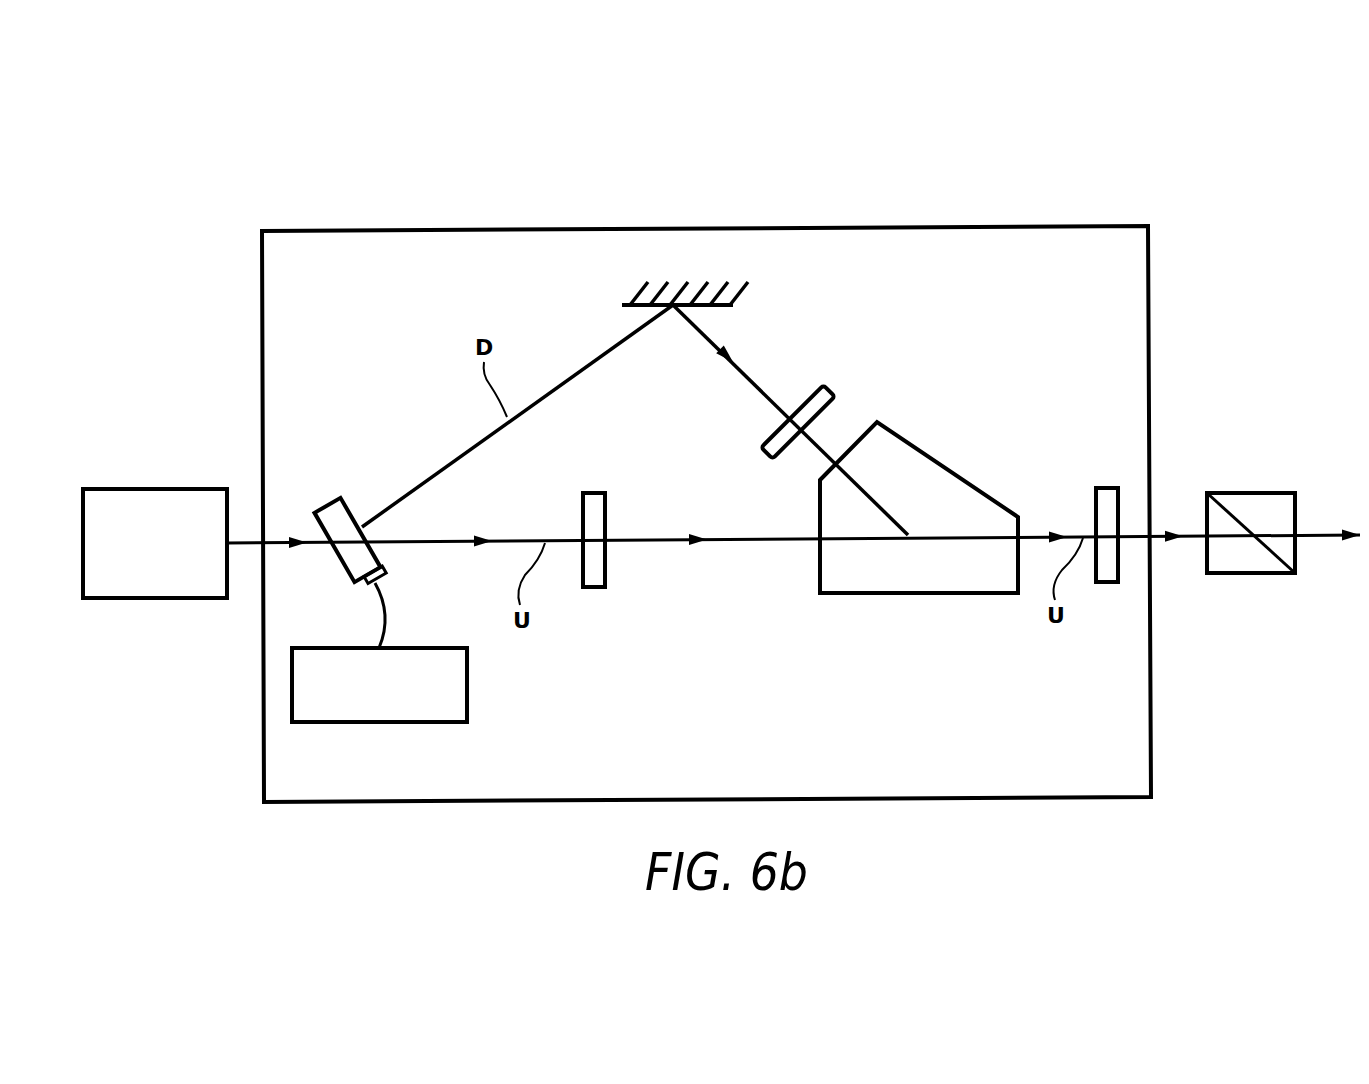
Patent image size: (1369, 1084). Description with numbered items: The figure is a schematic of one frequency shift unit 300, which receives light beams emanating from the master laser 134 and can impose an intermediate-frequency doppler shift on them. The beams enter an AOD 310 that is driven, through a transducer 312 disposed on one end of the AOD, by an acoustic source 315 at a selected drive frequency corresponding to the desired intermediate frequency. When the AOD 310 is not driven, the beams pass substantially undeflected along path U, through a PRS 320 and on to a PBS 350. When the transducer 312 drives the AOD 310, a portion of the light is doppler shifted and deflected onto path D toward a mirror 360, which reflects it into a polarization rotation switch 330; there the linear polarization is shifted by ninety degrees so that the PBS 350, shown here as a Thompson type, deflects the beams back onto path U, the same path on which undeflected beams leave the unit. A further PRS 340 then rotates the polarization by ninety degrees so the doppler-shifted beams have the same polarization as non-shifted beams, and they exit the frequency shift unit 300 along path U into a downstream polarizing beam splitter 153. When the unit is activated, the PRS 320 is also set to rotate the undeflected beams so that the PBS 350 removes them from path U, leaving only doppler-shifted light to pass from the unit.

The master laser 134 is at (150, 488).
The frequency shift unit 300 is at (558, 230).
The AOD 310 is at (350, 503).
The transducer 312 is at (356, 582).
The acoustic source 315 is at (390, 723).
The PRS 320 is at (597, 588).
The polarization rotation switch 330 is at (813, 385).
The PRS 340 is at (1103, 488).
The PBS 350 is at (945, 596).
The mirror 360 is at (622, 305).
The polarizing beam splitter 153 is at (1243, 493).